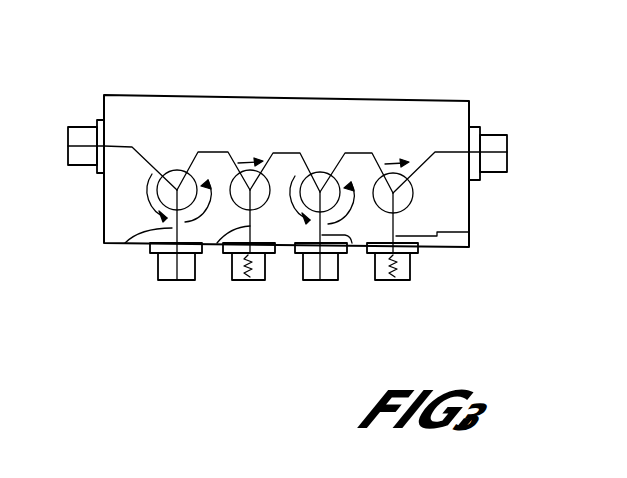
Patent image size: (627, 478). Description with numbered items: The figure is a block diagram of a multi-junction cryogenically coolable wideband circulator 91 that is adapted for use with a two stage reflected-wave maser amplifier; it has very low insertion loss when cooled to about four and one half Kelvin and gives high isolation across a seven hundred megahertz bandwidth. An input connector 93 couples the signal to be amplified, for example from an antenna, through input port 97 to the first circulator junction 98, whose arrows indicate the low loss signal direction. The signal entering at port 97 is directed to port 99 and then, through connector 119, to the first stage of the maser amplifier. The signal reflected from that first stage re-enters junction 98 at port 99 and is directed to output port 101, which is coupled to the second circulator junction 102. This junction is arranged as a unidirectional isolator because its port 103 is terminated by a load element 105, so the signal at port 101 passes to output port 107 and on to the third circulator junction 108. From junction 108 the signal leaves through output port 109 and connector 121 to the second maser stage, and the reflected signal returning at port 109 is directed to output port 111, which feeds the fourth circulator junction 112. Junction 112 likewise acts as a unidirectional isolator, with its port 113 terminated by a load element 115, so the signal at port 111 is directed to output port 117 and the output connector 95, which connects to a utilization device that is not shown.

The circulator 91 is at (430, 99).
The input connector 93 is at (67, 166).
The output connector 95 is at (508, 162).
The input port 97 is at (118, 147).
The first circulator junction 98 is at (174, 171).
The port 99 is at (132, 243).
The output port 101 is at (210, 152).
The second circulator junction 102 is at (250, 170).
The port 103 is at (222, 243).
The load element 105 is at (247, 283).
The output port 107 is at (284, 153).
The third circulator junction 108 is at (323, 172).
The output port 109 is at (354, 243).
The output port 111 is at (361, 153).
The fourth circulator junction 112 is at (394, 173).
The port 113 is at (470, 232).
The load element 115 is at (393, 283).
The output port 117 is at (434, 152).
The connector 119 is at (172, 280).
The connector 121 is at (323, 282).